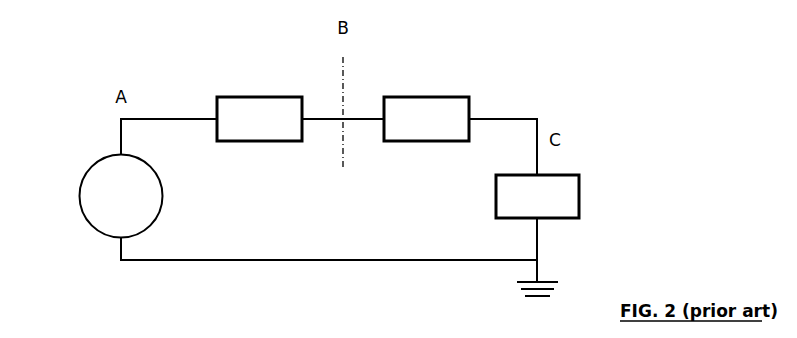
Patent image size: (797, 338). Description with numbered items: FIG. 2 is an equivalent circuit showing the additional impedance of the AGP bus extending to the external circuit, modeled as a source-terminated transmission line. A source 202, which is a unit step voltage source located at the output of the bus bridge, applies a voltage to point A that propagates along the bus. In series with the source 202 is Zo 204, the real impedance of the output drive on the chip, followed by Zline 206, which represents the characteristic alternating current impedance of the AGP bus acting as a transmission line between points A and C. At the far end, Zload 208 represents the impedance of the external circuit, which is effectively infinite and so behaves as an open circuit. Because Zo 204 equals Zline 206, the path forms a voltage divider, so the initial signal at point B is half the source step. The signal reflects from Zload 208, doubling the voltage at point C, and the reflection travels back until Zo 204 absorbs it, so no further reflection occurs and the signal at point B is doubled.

The source 202 is at (80, 195).
The output impedance Zo 204 is at (261, 95).
The line impedance Zline 206 is at (428, 95).
The load impedance Zload 208 is at (581, 194).